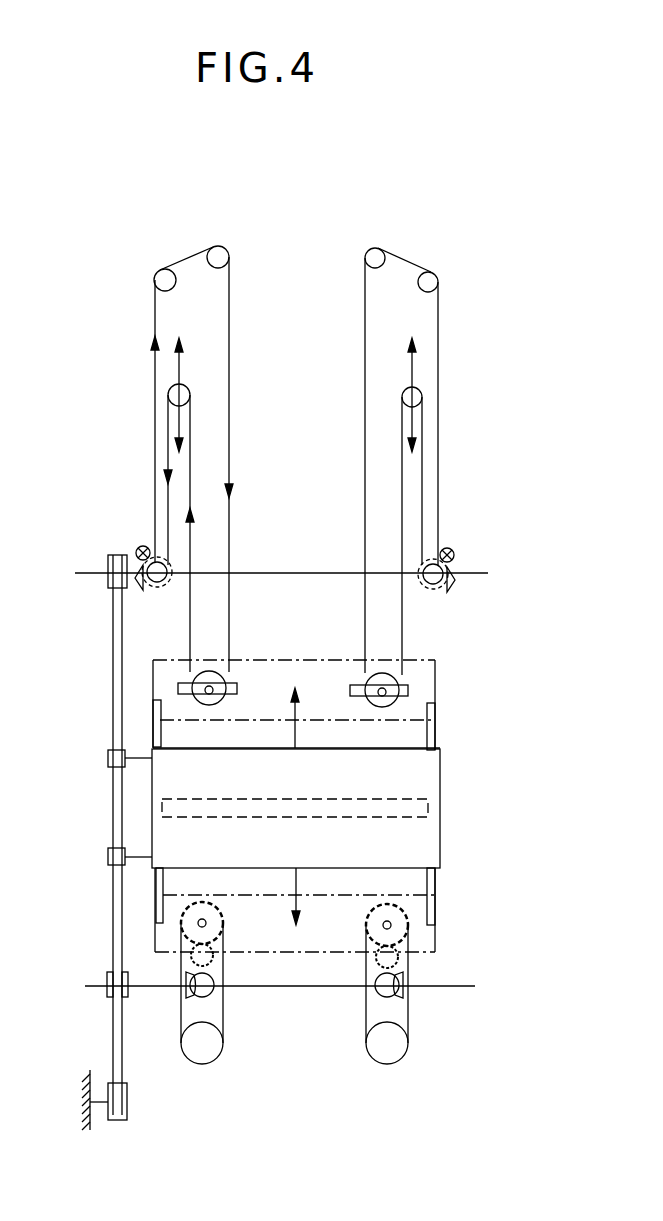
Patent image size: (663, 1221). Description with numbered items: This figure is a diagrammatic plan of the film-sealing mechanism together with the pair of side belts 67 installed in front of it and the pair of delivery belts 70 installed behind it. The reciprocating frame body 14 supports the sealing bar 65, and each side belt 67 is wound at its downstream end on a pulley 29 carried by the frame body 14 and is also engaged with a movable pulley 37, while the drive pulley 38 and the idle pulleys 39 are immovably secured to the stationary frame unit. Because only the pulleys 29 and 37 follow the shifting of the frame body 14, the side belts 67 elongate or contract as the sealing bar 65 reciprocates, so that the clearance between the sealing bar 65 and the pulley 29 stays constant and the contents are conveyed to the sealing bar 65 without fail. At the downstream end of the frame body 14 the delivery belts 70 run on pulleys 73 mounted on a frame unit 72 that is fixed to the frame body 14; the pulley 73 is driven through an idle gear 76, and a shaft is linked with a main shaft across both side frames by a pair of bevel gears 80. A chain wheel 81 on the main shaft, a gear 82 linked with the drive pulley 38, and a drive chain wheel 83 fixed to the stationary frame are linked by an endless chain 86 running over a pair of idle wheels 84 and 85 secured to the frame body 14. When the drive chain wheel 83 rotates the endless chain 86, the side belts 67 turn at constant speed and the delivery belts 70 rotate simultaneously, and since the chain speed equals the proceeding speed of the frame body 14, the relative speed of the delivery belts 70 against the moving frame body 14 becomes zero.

The frame body 14 is at (332, 750).
The pulley 29 is at (225, 700).
The movable pulley 37 is at (185, 388).
The drive pulley 38 is at (160, 586).
The idle pulleys 39 is at (215, 270).
The sealing bar 65 is at (420, 800).
The side belts 67 is at (222, 622).
The delivery belts 70 is at (220, 1007).
The frame unit 72 is at (292, 958).
The pulley 73 is at (400, 928).
The idle gear 76 is at (397, 958).
The bevel gears 80 is at (388, 996).
The chain wheel 81 is at (108, 993).
The gear 82 is at (113, 555).
The drive chain wheel 83 is at (127, 1100).
The idle wheel 84 is at (108, 758).
The idle wheel 85 is at (108, 857).
The endless chain 86 is at (118, 915).